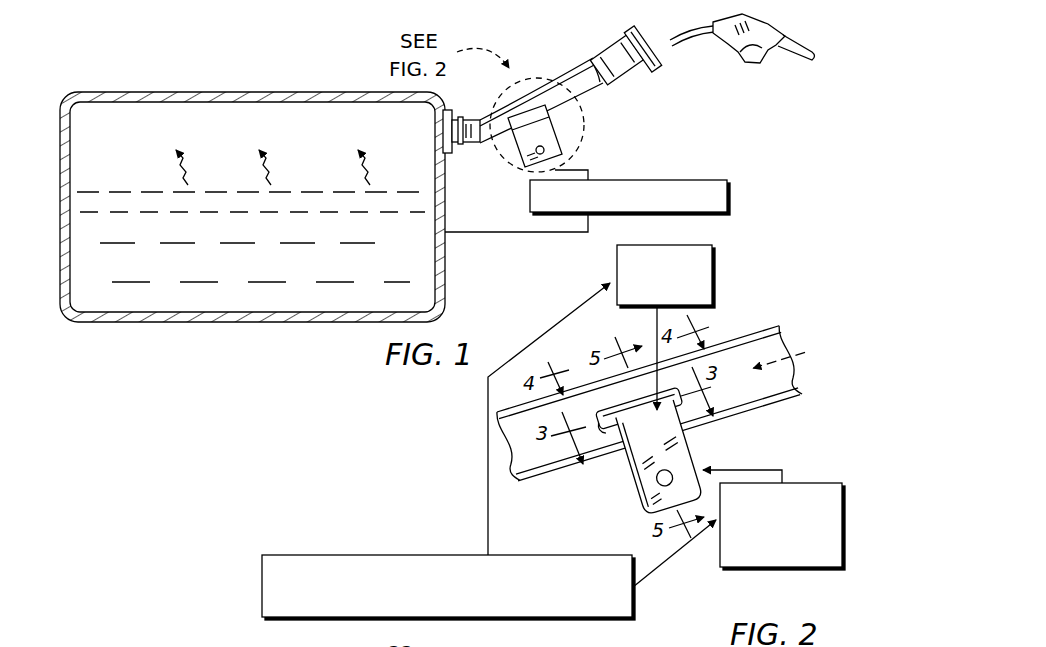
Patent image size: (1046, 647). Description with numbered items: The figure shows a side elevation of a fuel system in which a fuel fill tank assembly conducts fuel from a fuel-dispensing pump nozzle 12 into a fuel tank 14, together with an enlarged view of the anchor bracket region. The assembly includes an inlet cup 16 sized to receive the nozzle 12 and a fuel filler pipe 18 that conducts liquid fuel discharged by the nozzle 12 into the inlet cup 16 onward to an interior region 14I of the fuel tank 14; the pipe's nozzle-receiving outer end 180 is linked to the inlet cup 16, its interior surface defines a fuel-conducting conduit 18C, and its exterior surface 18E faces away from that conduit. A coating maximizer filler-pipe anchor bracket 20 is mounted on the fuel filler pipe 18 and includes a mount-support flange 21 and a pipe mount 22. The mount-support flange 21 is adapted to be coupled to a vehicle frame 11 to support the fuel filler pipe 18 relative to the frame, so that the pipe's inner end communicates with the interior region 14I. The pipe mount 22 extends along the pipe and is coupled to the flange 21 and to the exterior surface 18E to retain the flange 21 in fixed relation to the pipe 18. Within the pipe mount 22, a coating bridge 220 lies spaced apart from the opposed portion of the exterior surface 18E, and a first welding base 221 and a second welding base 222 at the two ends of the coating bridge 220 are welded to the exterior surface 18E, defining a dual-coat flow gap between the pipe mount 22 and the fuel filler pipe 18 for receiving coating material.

In FIG. 1, the vehicle frame 11 is at (686, 179).
In FIG. 1, the fuel-dispensing pump nozzle 12 is at (782, 22).
In FIG. 1, the fuel tank 14 is at (175, 86).
In FIG. 1, the interior region 14I is at (110, 142).
In FIG. 1, the inlet cup 16 is at (650, 88).
In FIG. 1, the fuel filler pipe 18 is at (540, 90).
In FIG. 2, the fuel filler pipe 18 is at (752, 334).
In FIG. 2, the fuel-conducting conduit 18C is at (787, 350).
In FIG. 2, the exterior surface 18E is at (748, 390).
In FIG. 1, the filler pipe outer end 180 is at (593, 88).
In FIG. 1, the coating maximizer filler-pipe anchor bracket 20 is at (516, 162).
In FIG. 2, the coating maximizer filler-pipe anchor bracket 20 is at (509, 503).
In FIG. 2, the mount-support flange 21 is at (802, 483).
In FIG. 2, the pipe mount 22 is at (670, 246).
In FIG. 2, the coating bridge 220 is at (633, 506).
In FIG. 2, the first welding base 221 is at (684, 425).
In FIG. 2, the second welding base 222 is at (600, 433).